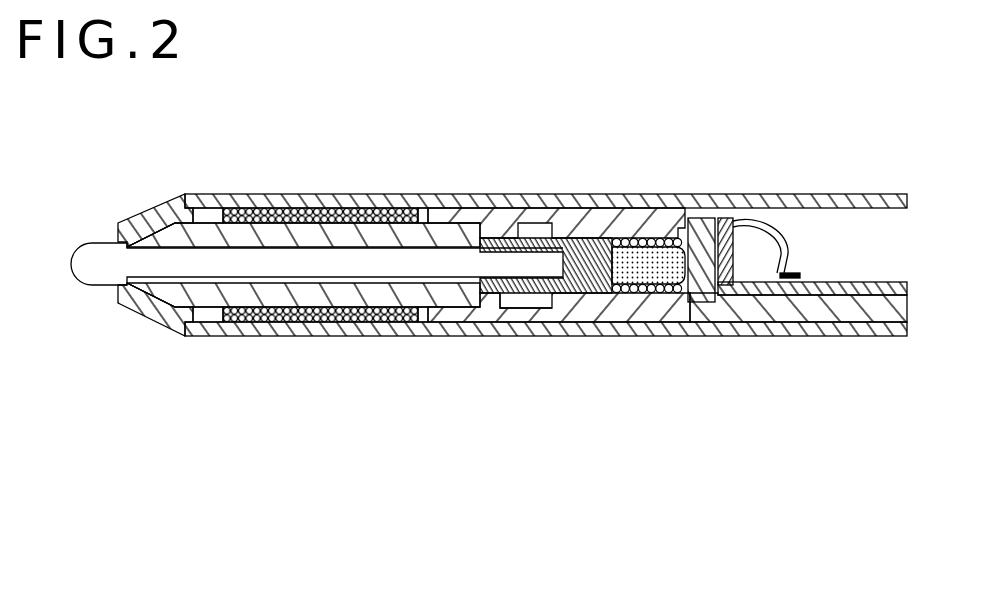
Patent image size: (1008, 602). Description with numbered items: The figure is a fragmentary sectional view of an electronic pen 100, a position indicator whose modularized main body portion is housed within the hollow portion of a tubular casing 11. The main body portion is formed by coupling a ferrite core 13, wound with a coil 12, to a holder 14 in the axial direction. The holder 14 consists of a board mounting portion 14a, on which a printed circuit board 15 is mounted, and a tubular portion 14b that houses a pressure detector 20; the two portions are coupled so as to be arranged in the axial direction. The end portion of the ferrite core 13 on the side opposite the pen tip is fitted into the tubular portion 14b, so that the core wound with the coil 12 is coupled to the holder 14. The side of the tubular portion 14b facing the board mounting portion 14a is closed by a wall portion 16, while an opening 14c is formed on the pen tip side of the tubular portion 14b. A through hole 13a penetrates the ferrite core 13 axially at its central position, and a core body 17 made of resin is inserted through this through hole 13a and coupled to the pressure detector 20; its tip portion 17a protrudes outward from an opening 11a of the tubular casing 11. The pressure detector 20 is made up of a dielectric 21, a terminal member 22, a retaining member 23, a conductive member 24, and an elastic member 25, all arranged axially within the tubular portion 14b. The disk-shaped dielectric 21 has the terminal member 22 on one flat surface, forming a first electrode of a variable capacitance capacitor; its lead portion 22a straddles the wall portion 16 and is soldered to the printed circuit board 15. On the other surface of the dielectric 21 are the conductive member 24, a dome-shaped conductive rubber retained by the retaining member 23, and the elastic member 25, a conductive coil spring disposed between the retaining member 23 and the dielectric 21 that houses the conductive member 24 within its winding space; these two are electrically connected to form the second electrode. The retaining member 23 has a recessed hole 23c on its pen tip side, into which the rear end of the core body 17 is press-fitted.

The electronic pen 100 is at (432, 117).
The tubular casing 11 is at (832, 205).
The opening of tubular casing 11a is at (123, 227).
The coil 12 is at (343, 194).
The ferrite core 13 is at (200, 230).
The through hole 13a is at (167, 222).
The holder 14 is at (775, 385).
The board mounting portion 14a is at (773, 313).
The tubular portion 14b is at (617, 313).
The opening 14c is at (450, 228).
The printed circuit board 15 is at (860, 290).
The wall portion 16 is at (773, 240).
The core body 17 is at (137, 268).
The tip portion 17a is at (80, 267).
The pressure detector 20 is at (560, 140).
The dielectric 21 is at (701, 225).
The terminal member 22 is at (739, 222).
The lead portion 22a is at (793, 272).
The retaining member 23 is at (588, 248).
The recessed hole 23c is at (503, 298).
The conductive member 24 is at (656, 250).
The elastic member 25 is at (627, 240).